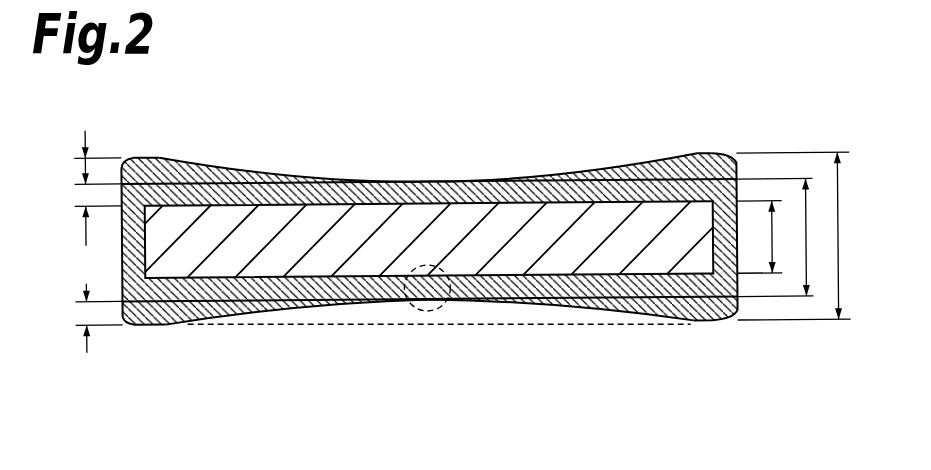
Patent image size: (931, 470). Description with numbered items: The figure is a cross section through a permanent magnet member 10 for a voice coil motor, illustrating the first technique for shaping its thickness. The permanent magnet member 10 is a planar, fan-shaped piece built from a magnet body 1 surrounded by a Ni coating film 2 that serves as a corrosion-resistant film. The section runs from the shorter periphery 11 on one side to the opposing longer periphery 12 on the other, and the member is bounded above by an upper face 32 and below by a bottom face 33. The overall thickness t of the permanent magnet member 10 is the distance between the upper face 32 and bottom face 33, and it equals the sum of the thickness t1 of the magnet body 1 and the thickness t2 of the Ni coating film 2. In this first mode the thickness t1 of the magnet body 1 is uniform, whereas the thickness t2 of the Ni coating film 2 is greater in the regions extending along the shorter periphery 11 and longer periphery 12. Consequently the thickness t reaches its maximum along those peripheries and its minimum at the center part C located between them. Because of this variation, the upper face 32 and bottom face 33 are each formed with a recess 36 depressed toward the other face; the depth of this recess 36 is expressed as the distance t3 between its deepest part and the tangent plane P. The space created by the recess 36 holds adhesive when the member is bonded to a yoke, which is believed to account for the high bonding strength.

The magnet body 1 is at (420, 212).
The Ni coating film 2 is at (575, 171).
The permanent magnet member 10 is at (708, 328).
The shorter periphery 11 is at (121, 256).
The longer periphery 12 is at (738, 295).
The upper face 32 is at (229, 166).
The bottom face 33 is at (227, 316).
The recess 36 is at (432, 300).
The center part C is at (444, 306).
The tangent plane P is at (277, 326).
The thickness of the permanent magnet member t is at (847, 235).
The thickness of the magnet body t1 is at (783, 237).
The thickness of the Ni coating film t2 is at (70, 226).
The distance between deepest part and tangent plane t3 is at (70, 318).